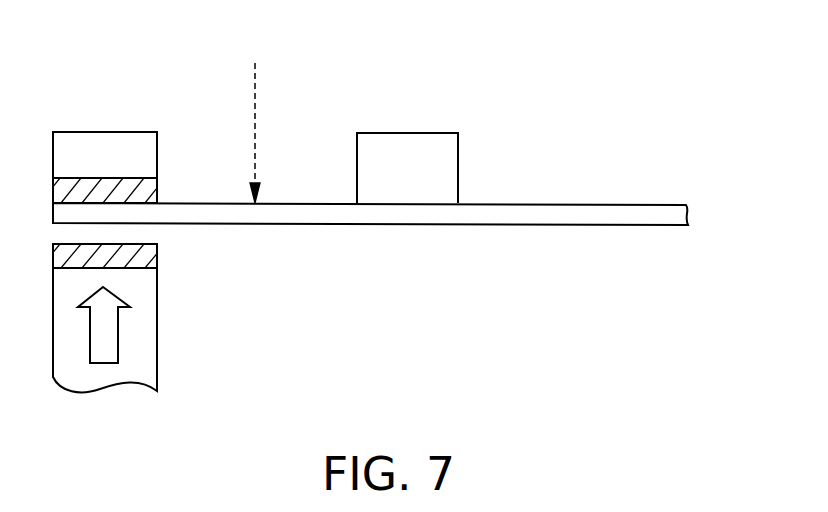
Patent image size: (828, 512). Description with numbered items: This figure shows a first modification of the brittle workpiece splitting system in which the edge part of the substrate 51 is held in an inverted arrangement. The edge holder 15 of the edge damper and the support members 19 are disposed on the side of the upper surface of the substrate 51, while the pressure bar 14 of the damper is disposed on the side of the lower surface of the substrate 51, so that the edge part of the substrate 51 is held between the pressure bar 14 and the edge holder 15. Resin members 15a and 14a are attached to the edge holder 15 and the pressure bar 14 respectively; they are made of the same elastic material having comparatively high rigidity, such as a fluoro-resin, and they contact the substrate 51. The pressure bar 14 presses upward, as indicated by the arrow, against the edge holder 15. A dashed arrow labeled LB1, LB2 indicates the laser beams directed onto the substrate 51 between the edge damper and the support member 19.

The pressure bar 14 is at (147, 290).
The resin member 14a is at (149, 250).
The edge holder 15 is at (149, 140).
The resin member 15a is at (147, 182).
The support member 19 is at (447, 155).
The substrate 51 is at (620, 217).
The light beam LB1 is at (321, 132).
The light beam LB2 is at (255, 70).